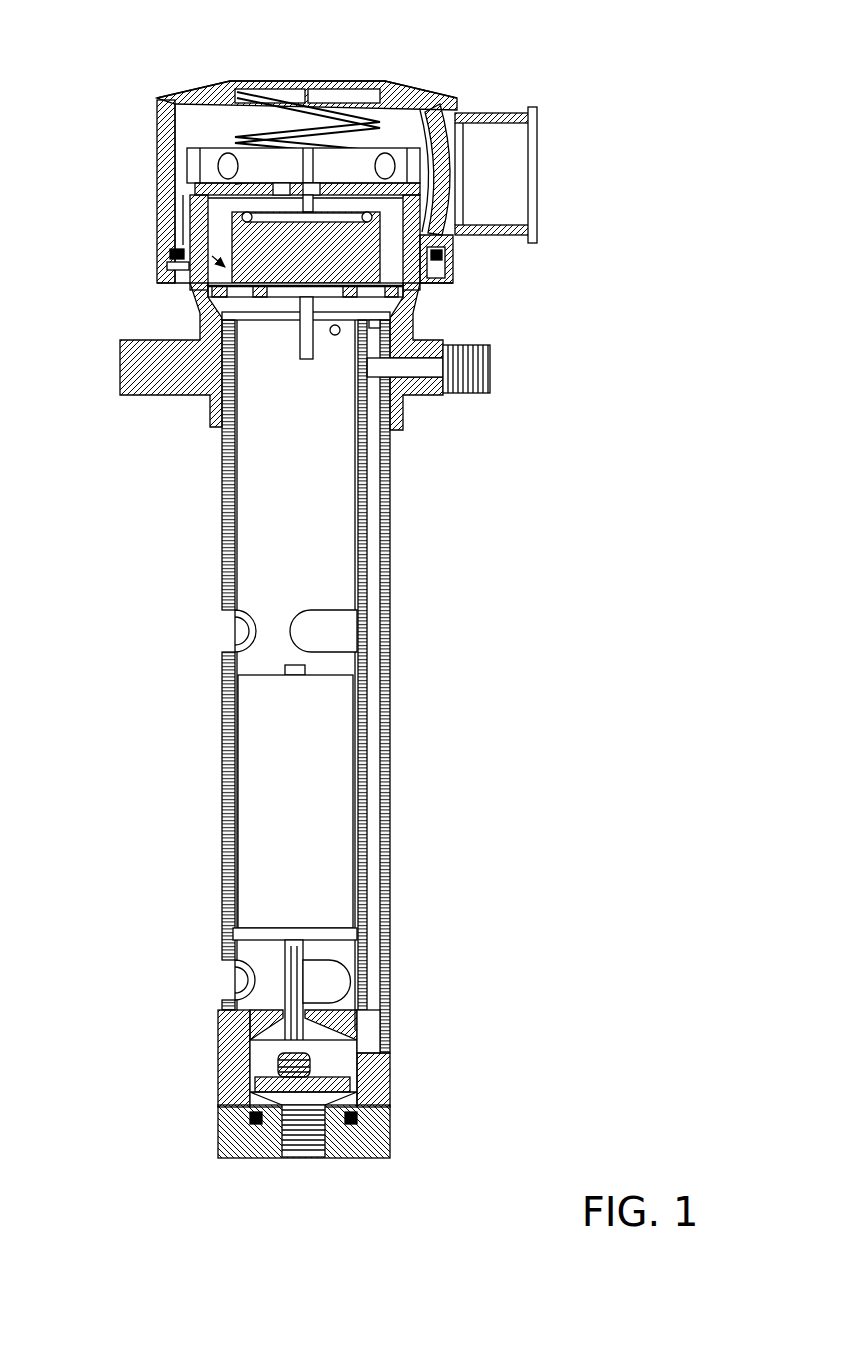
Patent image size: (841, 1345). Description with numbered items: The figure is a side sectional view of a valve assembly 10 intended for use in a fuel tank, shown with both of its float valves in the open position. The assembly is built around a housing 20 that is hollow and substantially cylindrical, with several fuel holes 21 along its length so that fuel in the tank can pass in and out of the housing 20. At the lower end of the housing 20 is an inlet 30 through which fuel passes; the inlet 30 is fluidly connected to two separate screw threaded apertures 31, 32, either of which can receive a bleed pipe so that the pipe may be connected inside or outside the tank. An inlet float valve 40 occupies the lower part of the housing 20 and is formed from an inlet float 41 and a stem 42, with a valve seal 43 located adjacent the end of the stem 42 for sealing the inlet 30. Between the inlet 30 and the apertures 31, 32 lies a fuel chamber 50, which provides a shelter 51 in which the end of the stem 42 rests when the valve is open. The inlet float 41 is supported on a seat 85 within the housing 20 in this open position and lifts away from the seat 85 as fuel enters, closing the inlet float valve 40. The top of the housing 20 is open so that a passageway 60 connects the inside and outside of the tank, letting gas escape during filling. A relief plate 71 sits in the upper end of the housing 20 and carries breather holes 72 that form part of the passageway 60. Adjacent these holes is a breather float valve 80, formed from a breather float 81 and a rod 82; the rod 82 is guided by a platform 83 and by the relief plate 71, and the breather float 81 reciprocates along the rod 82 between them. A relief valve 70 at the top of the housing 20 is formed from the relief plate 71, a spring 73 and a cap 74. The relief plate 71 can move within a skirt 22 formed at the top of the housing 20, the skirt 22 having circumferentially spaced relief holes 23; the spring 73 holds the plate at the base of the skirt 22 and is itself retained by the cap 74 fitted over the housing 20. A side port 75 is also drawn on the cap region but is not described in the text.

The valve assembly 10 is at (652, 94).
The housing 20 is at (212, 489).
The fuel holes 21 is at (238, 628).
The skirt 22 is at (410, 152).
The relief holes 23 is at (168, 98).
The inlet 30 is at (372, 1032).
The screw threaded aperture 31 is at (490, 378).
The screw threaded aperture 32 is at (303, 1125).
The inlet float valve 40 is at (354, 847).
The inlet float 41 is at (277, 757).
The stem 42 is at (307, 1007).
The valve seal 43 is at (280, 1073).
The fuel chamber 50 is at (387, 1066).
The shelter 51 is at (352, 1097).
The passageway 60 is at (302, 505).
The relief valve 70 is at (238, 158).
The relief plate 71 is at (426, 192).
The breather holes 72 is at (277, 193).
The spring 73 is at (322, 106).
The cap 74 is at (160, 135).
The side port 75 is at (513, 181).
The breather float valve 80 is at (192, 283).
The breather float 81 is at (447, 276).
The rod 82 is at (300, 356).
The platform 83 is at (420, 290).
The seat 85 is at (232, 935).